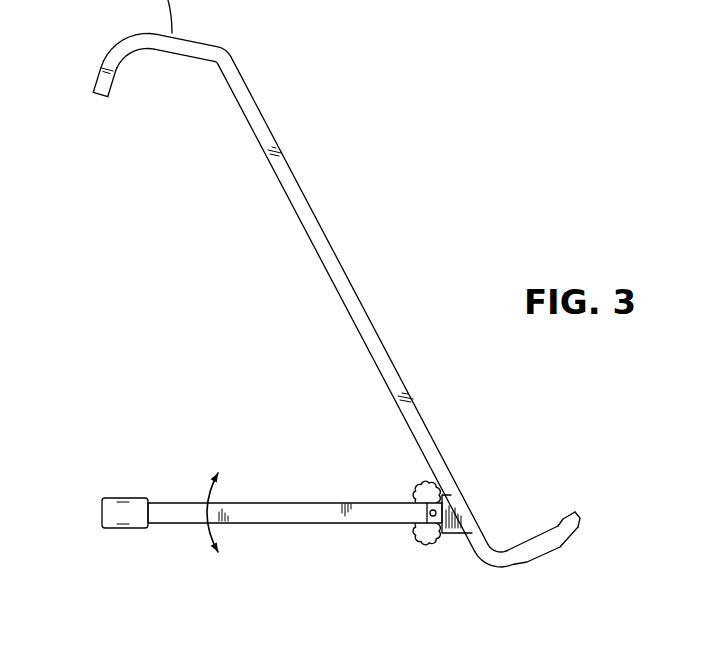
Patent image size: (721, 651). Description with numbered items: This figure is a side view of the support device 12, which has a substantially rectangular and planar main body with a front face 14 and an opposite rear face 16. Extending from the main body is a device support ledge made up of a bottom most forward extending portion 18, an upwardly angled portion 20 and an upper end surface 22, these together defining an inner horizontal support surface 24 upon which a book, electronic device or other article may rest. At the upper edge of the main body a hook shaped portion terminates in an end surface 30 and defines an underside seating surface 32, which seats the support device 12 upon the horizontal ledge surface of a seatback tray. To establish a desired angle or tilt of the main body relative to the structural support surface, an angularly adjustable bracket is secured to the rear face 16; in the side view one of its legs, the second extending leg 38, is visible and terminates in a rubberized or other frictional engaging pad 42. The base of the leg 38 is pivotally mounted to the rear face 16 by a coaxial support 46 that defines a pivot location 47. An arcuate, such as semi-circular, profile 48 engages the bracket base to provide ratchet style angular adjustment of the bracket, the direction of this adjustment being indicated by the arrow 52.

The support device 12 is at (103, 308).
The front face 14 is at (322, 220).
The rear face 16 is at (327, 272).
The bottom most forward extending portion 18 is at (558, 552).
The upwardly angled portion 20 is at (580, 518).
The upper end surface 22 is at (568, 517).
The inner horizontal support surface 24 is at (538, 538).
The end surface 30 is at (100, 97).
The underside seating surface 32 is at (185, 53).
The second extending leg 38 is at (271, 517).
The frictional engaging pad 42 is at (112, 512).
The coaxial support 46 is at (462, 535).
The pivot location 47 is at (418, 490).
The arcuate profile 48 is at (417, 535).
The arrow 52 is at (202, 533).